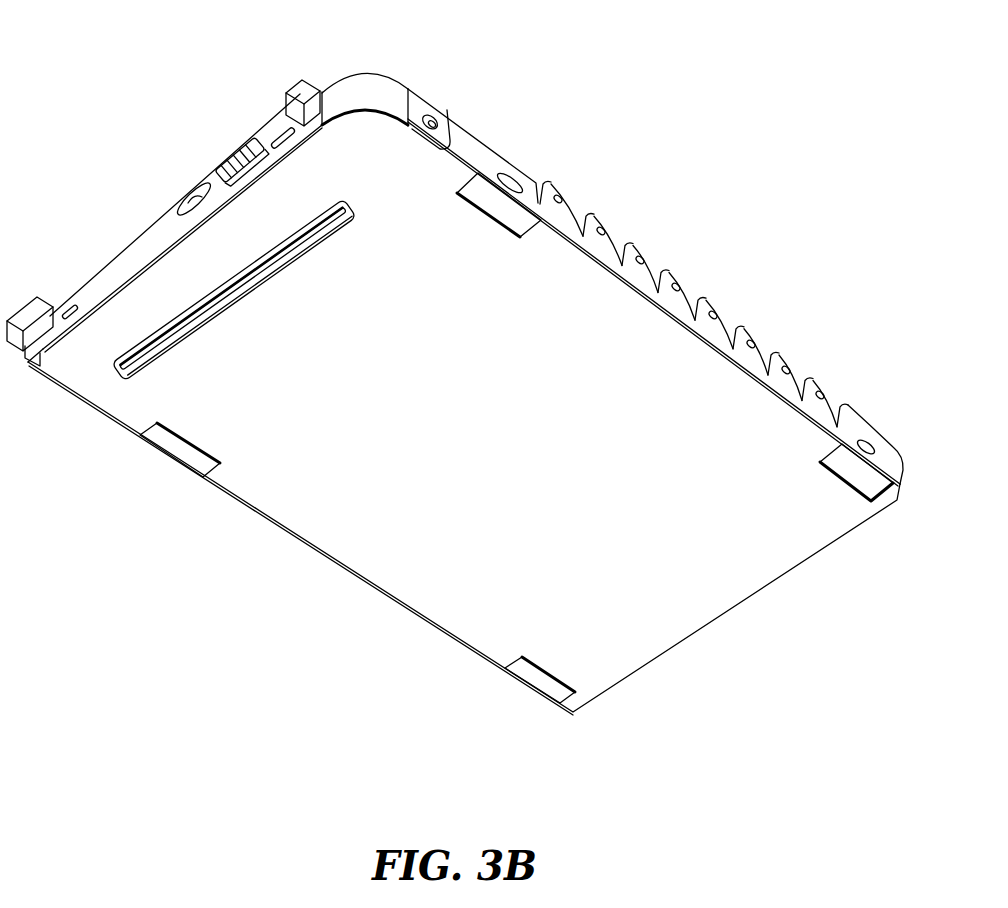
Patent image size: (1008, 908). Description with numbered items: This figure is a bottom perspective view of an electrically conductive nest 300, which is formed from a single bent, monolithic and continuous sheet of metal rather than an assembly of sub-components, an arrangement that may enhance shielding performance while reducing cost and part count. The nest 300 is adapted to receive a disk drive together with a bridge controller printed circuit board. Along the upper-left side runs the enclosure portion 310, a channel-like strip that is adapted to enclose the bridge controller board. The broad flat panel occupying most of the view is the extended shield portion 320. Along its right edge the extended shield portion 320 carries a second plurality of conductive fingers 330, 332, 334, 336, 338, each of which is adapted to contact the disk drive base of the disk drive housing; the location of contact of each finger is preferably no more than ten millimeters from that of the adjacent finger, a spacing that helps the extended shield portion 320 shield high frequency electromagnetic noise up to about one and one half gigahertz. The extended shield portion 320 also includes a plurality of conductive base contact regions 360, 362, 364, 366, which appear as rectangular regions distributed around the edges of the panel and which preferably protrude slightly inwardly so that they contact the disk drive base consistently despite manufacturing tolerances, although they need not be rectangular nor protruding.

The electrically conductive nest 300 is at (215, 68).
The enclosure portion 310 is at (143, 247).
The extended shield portion 320 is at (580, 472).
The conductive finger 330 is at (548, 198).
The conductive finger 332 is at (590, 222).
The conductive finger 334 is at (630, 253).
The conductive finger 336 is at (667, 280).
The conductive finger 338 is at (703, 310).
The conductive base contact region 360 is at (540, 678).
The conductive base contact region 362 is at (860, 472).
The conductive base contact region 364 is at (500, 212).
The conductive base contact region 366 is at (185, 452).